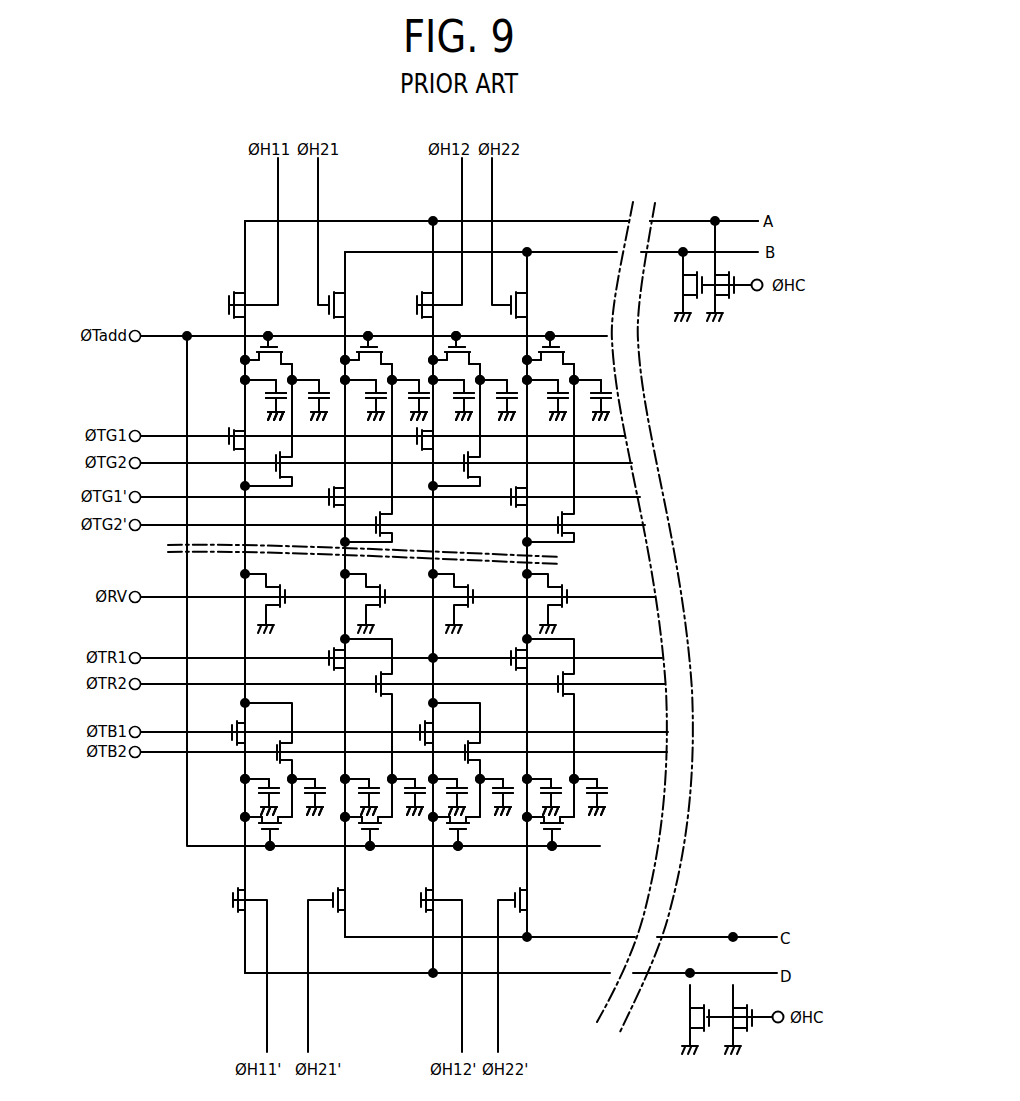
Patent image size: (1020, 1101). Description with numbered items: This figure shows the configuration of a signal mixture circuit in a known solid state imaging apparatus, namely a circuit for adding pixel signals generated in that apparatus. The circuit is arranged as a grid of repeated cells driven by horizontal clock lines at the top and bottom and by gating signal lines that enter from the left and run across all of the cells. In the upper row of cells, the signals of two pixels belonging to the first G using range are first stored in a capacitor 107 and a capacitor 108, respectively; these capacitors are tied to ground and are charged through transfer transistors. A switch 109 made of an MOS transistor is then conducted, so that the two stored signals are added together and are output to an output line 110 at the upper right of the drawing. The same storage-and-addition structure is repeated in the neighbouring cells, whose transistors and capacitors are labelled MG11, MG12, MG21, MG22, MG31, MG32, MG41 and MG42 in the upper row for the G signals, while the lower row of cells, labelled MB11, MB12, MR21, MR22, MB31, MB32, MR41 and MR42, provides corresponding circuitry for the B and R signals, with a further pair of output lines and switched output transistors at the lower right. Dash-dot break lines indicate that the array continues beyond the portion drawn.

The capacitor 107 is at (262, 407).
The capacitor 108 is at (265, 425).
The switch 109 is at (258, 358).
The output line 110 is at (742, 221).
The transistor MG11 is at (285, 390).
The transistor MG12 is at (322, 400).
The transistor MG21 is at (418, 400).
The transistor MG22 is at (387, 390).
The transistor MG31 is at (471, 390).
The transistor MG32 is at (512, 400).
The transistor MG41 is at (604, 400).
The transistor MG42 is at (566, 390).
The transistor MB11 is at (283, 806).
The transistor MB12 is at (289, 806).
The transistor MR21 is at (383, 806).
The transistor MR22 is at (386, 806).
The transistor MB31 is at (471, 806).
The transistor MB32 is at (479, 806).
The transistor MR41 is at (565, 806).
The transistor MR42 is at (573, 806).